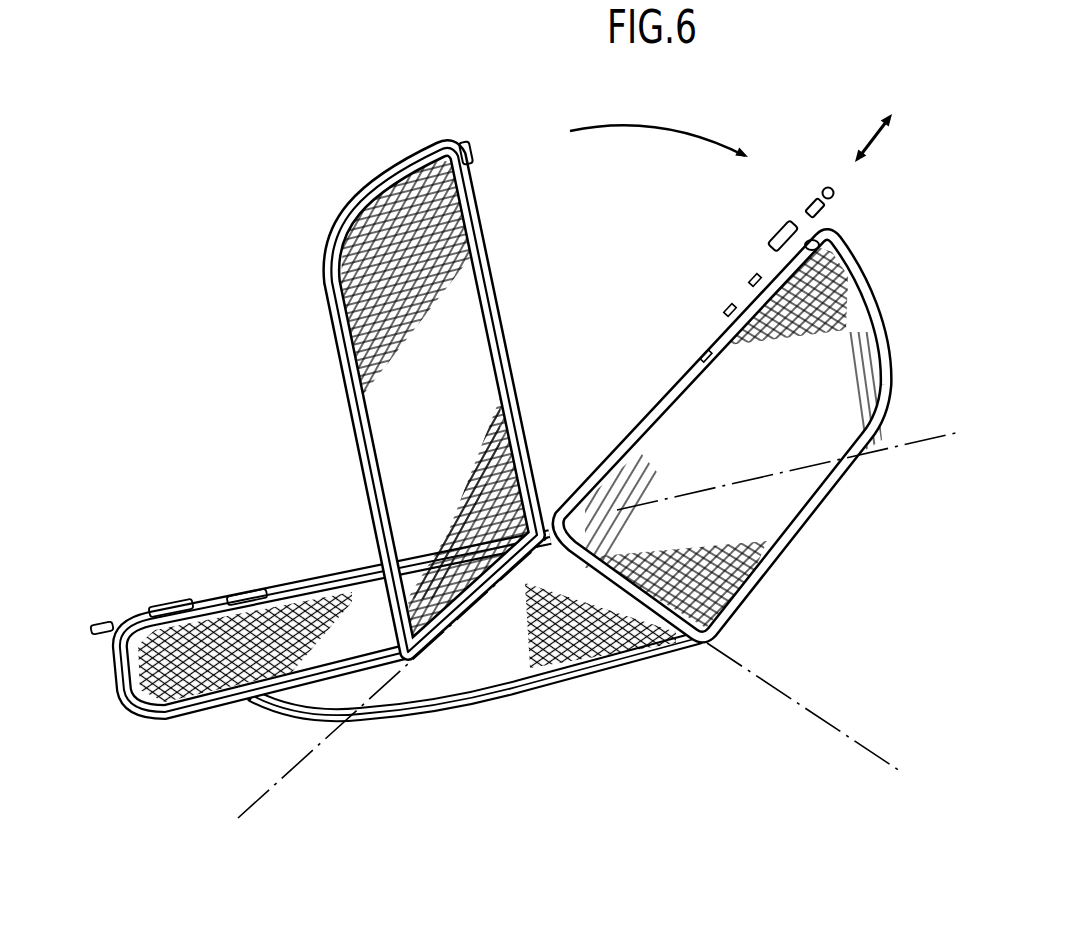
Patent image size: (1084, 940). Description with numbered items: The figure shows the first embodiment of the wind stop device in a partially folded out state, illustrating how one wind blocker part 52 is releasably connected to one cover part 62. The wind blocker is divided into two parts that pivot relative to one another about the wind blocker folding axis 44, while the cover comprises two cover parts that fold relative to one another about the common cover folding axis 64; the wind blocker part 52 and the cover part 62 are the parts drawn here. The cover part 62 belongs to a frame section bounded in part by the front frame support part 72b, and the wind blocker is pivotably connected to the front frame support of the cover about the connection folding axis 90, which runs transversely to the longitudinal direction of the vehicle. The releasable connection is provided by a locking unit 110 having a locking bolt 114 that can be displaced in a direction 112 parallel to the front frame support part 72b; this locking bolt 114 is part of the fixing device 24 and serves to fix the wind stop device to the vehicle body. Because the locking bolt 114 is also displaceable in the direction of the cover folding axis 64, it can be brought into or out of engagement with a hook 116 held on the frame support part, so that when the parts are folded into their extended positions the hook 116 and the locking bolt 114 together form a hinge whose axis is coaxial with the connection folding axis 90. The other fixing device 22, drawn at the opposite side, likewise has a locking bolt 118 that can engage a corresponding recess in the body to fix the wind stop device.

The fixing device 22 is at (172, 593).
The fixing device 24 is at (858, 263).
The wind blocker folding axis 44 is at (287, 772).
The wind blocker part 52 is at (340, 322).
The cover part 62 is at (840, 373).
The cover folding axis 64 is at (851, 706).
The front frame support part 72b is at (707, 356).
The connection folding axis 90 is at (957, 433).
The locking unit 110 is at (818, 253).
The direction 112 is at (867, 143).
The locking bolt 114 is at (795, 220).
The hook 116 is at (470, 151).
The locking bolt 118 is at (128, 620).